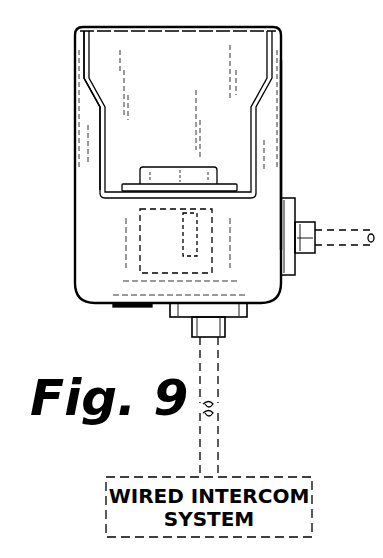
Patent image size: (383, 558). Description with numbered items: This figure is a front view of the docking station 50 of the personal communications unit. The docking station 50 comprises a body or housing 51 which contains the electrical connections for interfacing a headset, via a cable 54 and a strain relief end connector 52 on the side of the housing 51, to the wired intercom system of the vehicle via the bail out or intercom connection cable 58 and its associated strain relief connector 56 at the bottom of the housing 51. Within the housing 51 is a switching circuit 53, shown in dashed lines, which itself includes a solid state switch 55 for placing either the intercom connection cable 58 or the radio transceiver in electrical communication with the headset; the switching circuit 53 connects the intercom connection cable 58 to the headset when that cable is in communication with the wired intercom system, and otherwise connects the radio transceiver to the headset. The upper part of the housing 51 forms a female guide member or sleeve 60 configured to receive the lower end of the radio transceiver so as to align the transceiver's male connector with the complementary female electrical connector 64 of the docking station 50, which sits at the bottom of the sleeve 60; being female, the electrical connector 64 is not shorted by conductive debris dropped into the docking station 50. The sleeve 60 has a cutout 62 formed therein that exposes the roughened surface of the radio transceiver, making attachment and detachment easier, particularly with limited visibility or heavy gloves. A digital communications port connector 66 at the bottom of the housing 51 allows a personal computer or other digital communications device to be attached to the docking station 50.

The docking station 50 is at (56, 53).
The housing 51 is at (283, 108).
The strain relief end connector 52 is at (305, 222).
The switching circuit 53 is at (145, 255).
The cable 54 is at (348, 227).
The solid state switch 55 is at (195, 227).
The strain relief connector 56 is at (248, 318).
The intercom connection cable 58 is at (218, 377).
The sleeve 60 is at (189, 38).
The cutout 62 is at (104, 133).
The electrical connector 64 is at (206, 167).
The digital communications port connector 66 is at (137, 308).